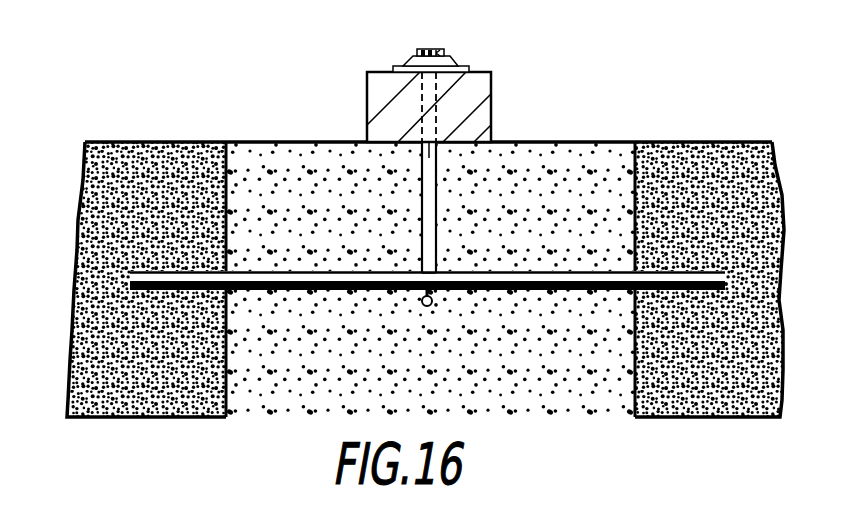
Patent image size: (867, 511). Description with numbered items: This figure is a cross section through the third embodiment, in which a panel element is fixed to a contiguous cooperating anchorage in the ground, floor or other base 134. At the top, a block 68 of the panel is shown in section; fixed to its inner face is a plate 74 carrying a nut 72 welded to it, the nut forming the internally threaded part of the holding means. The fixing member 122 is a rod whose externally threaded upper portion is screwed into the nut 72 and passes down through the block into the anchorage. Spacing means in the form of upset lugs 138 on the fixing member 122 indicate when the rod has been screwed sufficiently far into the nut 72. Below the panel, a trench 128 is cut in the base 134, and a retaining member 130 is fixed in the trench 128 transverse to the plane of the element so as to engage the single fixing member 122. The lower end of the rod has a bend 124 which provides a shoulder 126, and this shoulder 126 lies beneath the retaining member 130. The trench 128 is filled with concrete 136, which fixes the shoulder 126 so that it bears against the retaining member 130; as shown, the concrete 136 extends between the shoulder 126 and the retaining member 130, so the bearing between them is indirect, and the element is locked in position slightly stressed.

The block 68 is at (367, 102).
The nut 72 is at (449, 57).
The plate 74 is at (401, 66).
The fixing member 122 is at (437, 225).
The bend 124 is at (431, 303).
The shoulder 126 is at (414, 279).
The trench 128 is at (637, 235).
The retaining member 130 is at (532, 280).
The ground, floor or other base 134 is at (148, 162).
The concrete 136 is at (275, 165).
The upset lugs 138 is at (421, 155).